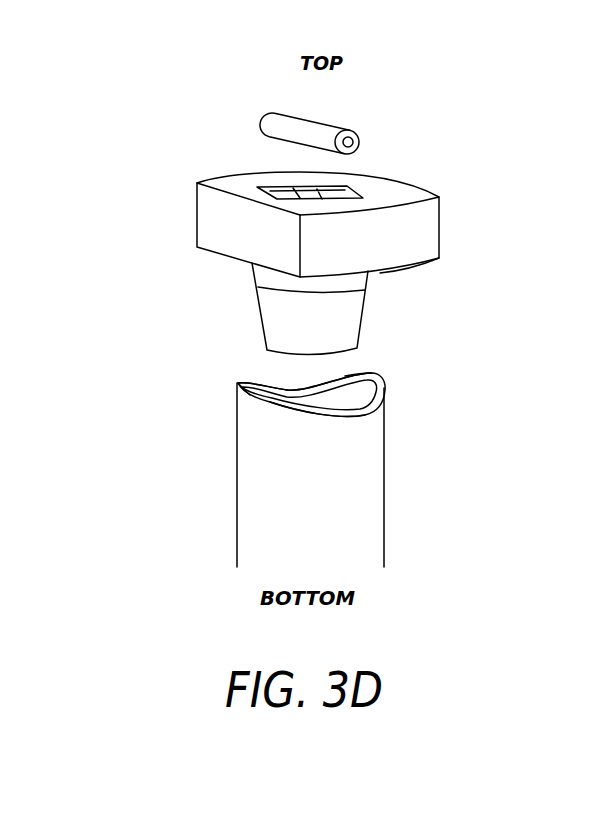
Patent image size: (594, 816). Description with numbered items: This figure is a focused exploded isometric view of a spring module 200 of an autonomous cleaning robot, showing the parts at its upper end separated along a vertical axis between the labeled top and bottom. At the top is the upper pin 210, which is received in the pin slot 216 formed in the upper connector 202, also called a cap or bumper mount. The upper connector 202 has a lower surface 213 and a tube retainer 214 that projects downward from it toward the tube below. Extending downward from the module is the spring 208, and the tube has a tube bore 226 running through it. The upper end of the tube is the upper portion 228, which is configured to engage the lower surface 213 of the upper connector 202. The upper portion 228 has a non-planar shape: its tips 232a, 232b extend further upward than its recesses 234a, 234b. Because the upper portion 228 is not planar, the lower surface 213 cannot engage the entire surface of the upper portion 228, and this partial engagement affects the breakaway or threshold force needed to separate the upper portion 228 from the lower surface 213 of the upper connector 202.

The spring module 200 is at (291, 307).
The upper connector 202 is at (363, 204).
The spring 208 is at (313, 453).
The upper pin 210 is at (322, 121).
The lower surface 213 is at (400, 270).
The tube retainer 214 is at (280, 307).
The pin slot 216 is at (343, 193).
The tube bore 226 is at (361, 396).
The upper portion 228 is at (250, 394).
The tip 232a is at (237, 383).
The tip 232b is at (377, 377).
The recess 234a is at (360, 410).
The recess 234b is at (283, 387).